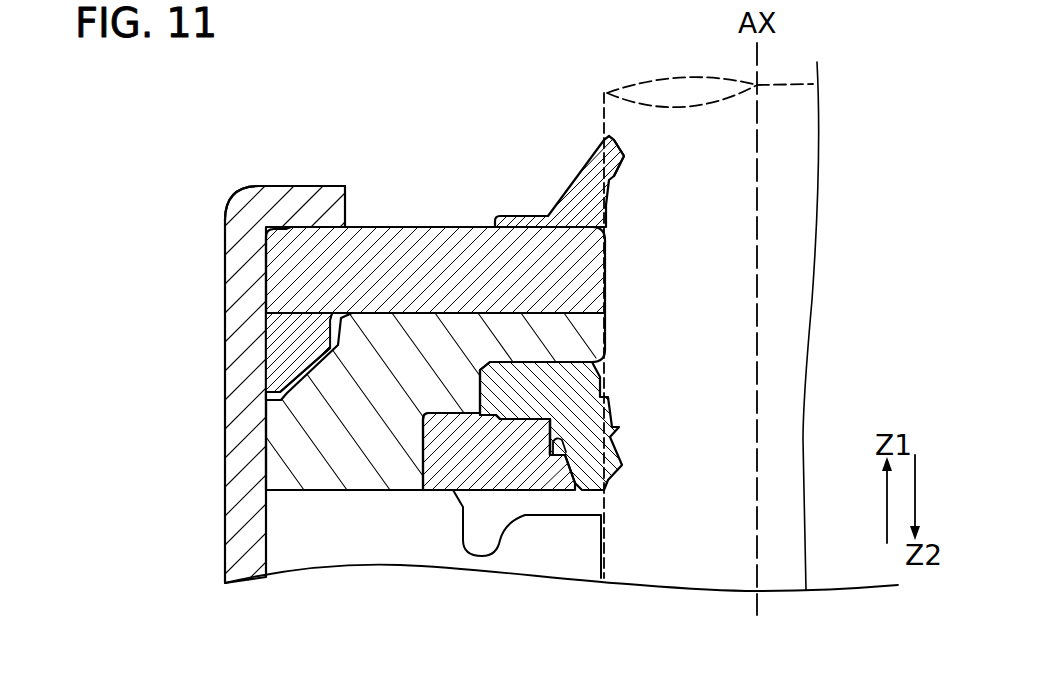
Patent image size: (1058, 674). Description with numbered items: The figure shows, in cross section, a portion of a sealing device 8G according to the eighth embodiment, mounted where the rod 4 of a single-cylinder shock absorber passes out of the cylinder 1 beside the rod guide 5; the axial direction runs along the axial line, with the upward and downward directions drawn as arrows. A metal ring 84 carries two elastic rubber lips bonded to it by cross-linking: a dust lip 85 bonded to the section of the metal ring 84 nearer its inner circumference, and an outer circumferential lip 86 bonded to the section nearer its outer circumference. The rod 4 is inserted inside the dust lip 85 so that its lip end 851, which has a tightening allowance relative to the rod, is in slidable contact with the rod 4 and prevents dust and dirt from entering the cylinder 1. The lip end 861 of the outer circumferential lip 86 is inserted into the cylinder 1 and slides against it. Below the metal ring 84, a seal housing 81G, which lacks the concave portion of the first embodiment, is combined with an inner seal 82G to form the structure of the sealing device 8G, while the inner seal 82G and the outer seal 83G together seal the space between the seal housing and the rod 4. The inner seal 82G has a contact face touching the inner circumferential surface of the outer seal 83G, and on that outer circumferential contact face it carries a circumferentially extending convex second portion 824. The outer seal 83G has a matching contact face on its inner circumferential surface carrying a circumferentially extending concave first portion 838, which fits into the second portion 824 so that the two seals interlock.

The cylinder 1 is at (291, 176).
The rod 4 is at (596, 106).
The rod guide 5 is at (262, 550).
The sealing device 8G is at (80, 203).
The seal housing 81G is at (255, 401).
The inner seal 82G is at (470, 382).
The outer seal 83G is at (410, 430).
The metal ring 84 is at (254, 281).
The dust lip 85 is at (482, 211).
The outer circumferential lip 86 is at (256, 335).
The lip end 851 is at (604, 140).
The lip end 861 is at (287, 392).
The second portion 824 is at (550, 423).
The first portion 838 is at (562, 445).